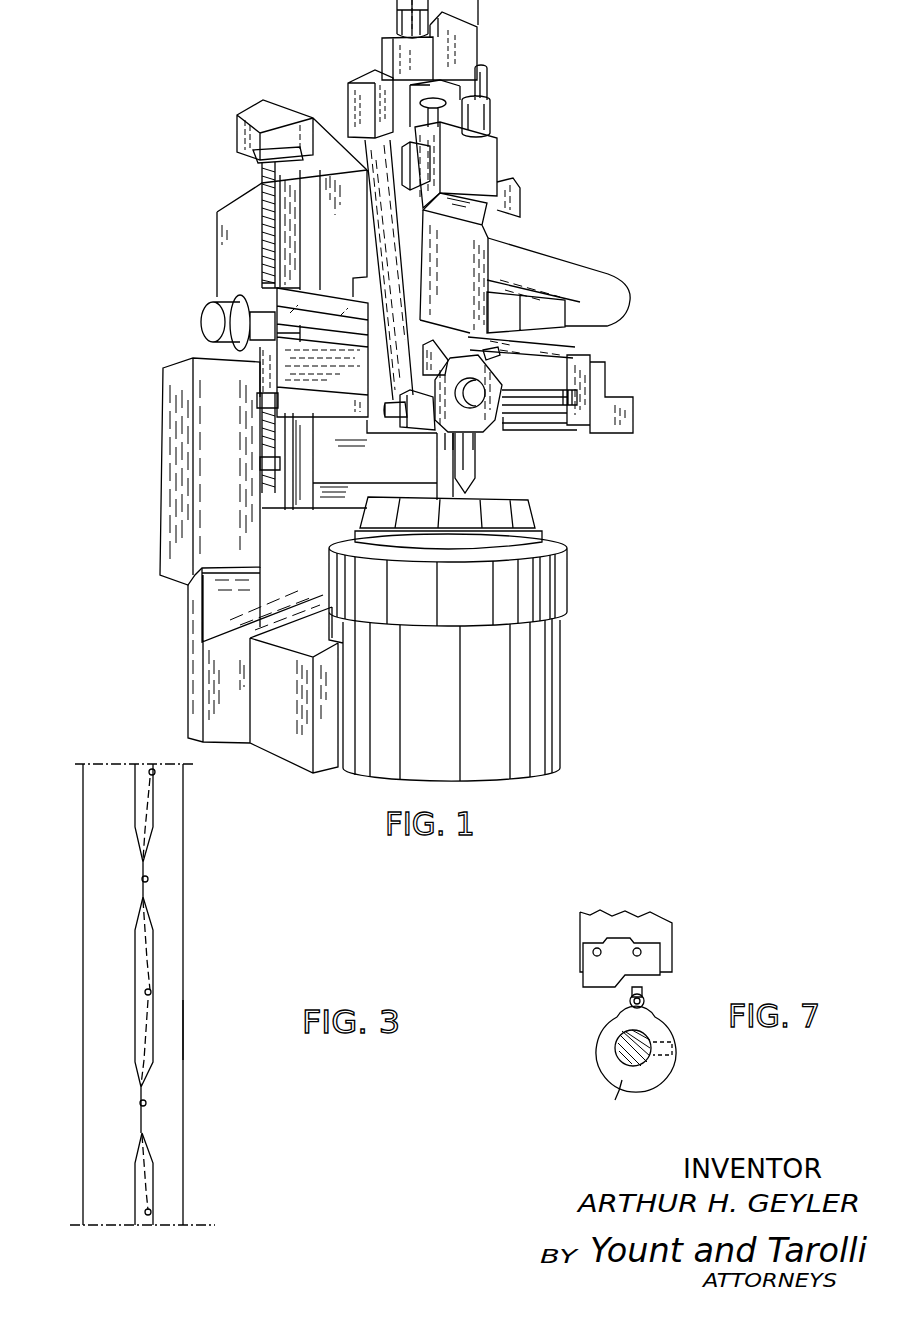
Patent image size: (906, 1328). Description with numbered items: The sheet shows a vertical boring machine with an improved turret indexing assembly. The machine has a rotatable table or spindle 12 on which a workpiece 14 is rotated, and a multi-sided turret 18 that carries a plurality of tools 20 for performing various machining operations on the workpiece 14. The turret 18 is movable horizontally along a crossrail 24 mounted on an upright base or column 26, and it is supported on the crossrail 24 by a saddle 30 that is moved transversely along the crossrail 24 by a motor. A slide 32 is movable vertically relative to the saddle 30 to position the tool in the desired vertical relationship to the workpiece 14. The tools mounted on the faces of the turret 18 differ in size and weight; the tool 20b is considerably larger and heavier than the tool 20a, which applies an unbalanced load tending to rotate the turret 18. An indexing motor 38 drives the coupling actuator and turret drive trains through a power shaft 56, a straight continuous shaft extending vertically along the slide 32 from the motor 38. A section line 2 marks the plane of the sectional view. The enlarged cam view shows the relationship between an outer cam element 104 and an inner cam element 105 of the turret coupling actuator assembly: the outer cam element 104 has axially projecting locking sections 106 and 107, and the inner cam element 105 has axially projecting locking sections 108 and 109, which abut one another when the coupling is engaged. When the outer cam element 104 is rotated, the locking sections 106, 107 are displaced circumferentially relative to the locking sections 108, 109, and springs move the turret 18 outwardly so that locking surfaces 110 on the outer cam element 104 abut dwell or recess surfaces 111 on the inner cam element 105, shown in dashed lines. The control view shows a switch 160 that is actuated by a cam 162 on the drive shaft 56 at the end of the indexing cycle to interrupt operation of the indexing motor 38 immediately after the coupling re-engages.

In FIG. 1, the section line 2- 2 is at (435, 492).
In FIG. 1, the rotatable table or spindle 12 is at (560, 582).
In FIG. 1, the workpiece 14 is at (530, 513).
In FIG. 1, the multi-sided turret 18 is at (510, 382).
In FIG. 1, the tools 20 is at (395, 436).
In FIG. 1, the tool 20a is at (472, 450).
In FIG. 1, the tool 20b is at (428, 417).
In FIG. 1, the crossrail 24 is at (560, 430).
In FIG. 1, the upright base or column 26 is at (232, 247).
In FIG. 1, the saddle 30 is at (490, 236).
In FIG. 1, the slide 32 is at (497, 160).
In FIG. 1, the indexing motor 38 is at (490, 125).
In FIG. 7, the power shaft 56 is at (598, 1050).
In FIG. 3, the outer cam element 104 is at (108, 980).
In FIG. 3, the inner cam element 105 is at (168, 1030).
In FIG. 3, the locking section 106 is at (133, 887).
In FIG. 3, the locking section 107 is at (150, 935).
In FIG. 3, the locking section 108 is at (148, 878).
In FIG. 3, the locking section 109 is at (143, 1125).
In FIG. 3, the locking surfaces 110 is at (143, 878).
In FIG. 3, the dwell or recess surfaces 111 is at (152, 772).
In FIG. 7, the switch 160 is at (583, 937).
In FIG. 7, the cam 162 is at (633, 1100).